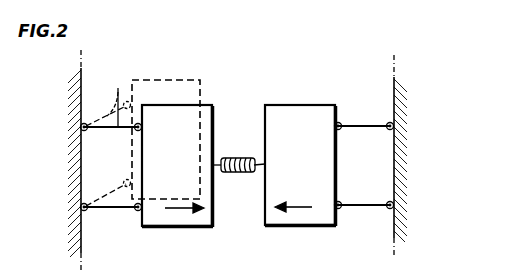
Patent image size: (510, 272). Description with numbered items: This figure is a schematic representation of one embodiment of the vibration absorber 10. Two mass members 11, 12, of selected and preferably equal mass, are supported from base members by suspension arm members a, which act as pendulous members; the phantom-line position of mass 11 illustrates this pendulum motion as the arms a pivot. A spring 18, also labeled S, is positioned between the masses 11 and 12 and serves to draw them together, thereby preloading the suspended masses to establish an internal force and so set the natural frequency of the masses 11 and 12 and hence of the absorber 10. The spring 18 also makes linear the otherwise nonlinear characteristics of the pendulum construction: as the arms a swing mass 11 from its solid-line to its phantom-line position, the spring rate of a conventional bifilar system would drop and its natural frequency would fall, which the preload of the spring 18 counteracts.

The vibration absorber 10 is at (237, 146).
The mass 11 is at (181, 224).
The mass 12 is at (306, 224).
The spring 18 is at (243, 174).
The spring S is at (240, 158).
The suspension arm member a is at (115, 100).